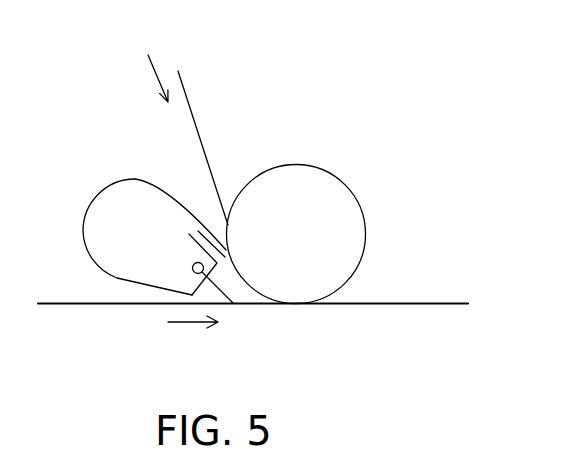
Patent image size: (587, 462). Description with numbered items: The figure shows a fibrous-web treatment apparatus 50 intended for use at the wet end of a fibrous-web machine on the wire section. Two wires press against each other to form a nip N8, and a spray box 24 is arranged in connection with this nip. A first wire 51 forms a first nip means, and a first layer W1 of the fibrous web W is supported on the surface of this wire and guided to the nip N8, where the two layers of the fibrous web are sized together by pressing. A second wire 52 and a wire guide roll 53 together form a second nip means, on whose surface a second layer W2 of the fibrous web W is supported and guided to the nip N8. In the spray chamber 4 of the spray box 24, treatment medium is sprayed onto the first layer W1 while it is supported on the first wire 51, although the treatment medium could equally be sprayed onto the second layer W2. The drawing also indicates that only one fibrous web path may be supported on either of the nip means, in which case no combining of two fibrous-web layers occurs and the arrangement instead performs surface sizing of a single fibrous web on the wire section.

The spray chamber 4 is at (230, 285).
The spray box 24 is at (112, 195).
The fibrous-web treatment apparatus 50 is at (400, 91).
The first wire 51 is at (138, 305).
The second wire 52 is at (198, 122).
The wire guide roll 53 is at (352, 205).
The fibrous web W is at (447, 302).
The first layer of the fibrous web W1 is at (60, 303).
The second layer of the fibrous web W2 is at (205, 166).
The nip N8 is at (345, 297).